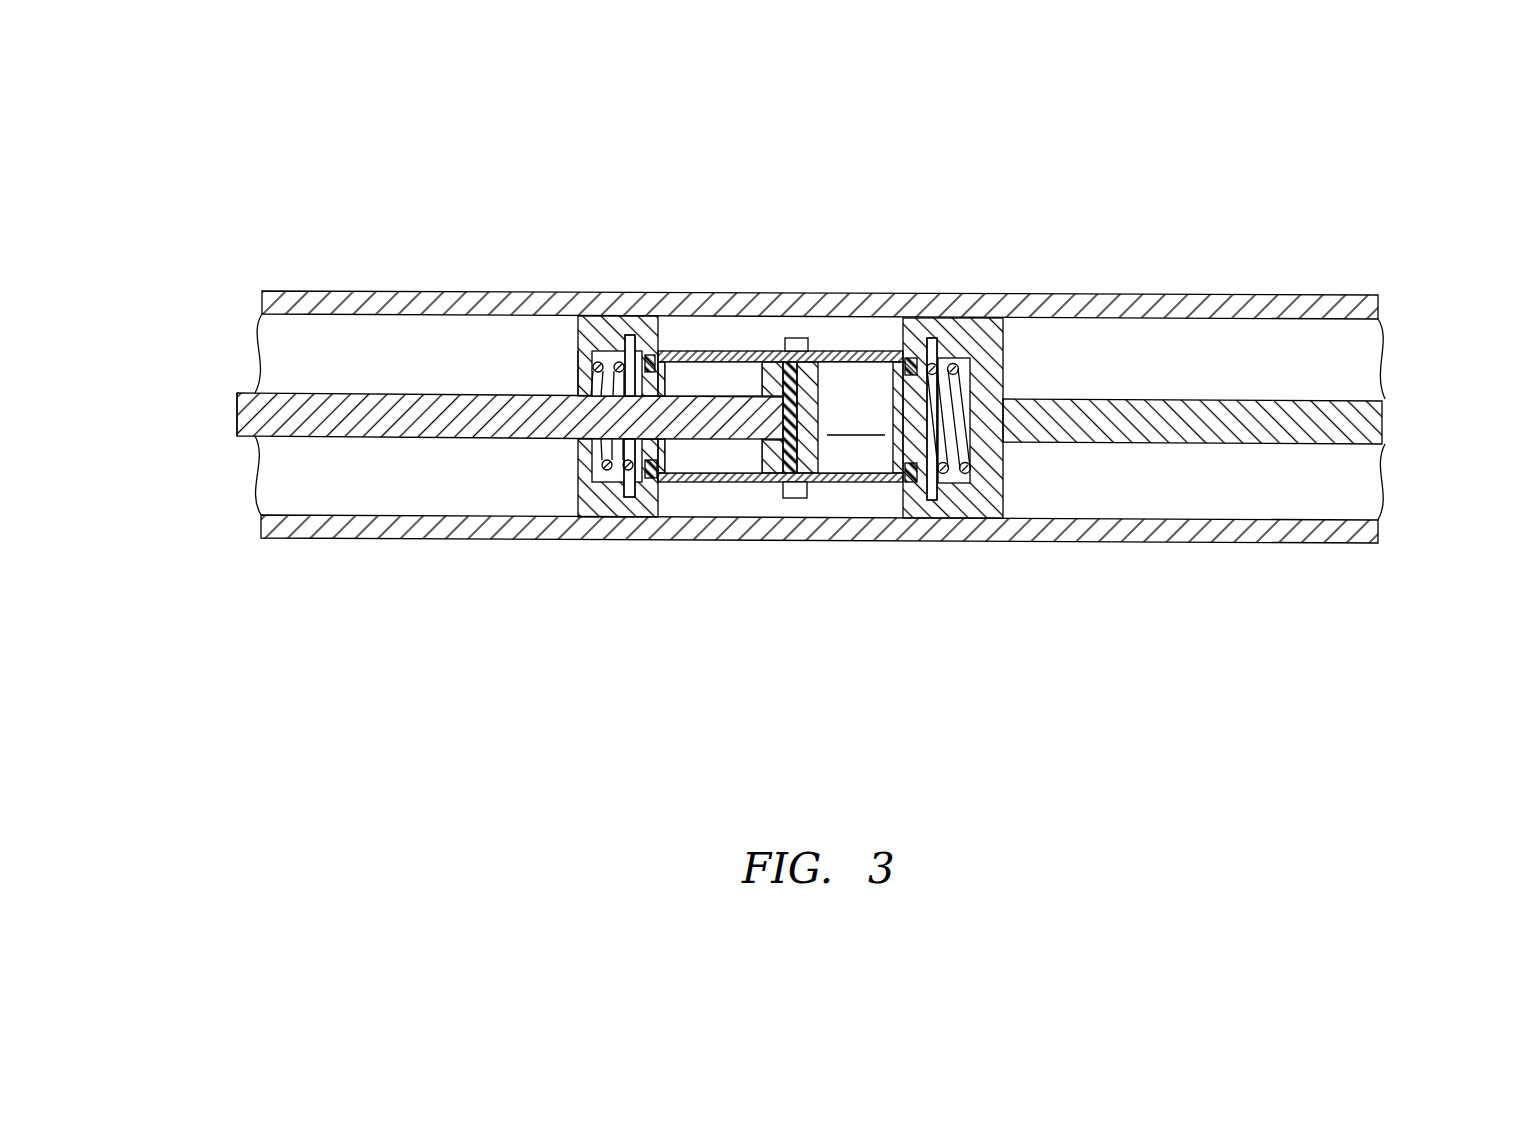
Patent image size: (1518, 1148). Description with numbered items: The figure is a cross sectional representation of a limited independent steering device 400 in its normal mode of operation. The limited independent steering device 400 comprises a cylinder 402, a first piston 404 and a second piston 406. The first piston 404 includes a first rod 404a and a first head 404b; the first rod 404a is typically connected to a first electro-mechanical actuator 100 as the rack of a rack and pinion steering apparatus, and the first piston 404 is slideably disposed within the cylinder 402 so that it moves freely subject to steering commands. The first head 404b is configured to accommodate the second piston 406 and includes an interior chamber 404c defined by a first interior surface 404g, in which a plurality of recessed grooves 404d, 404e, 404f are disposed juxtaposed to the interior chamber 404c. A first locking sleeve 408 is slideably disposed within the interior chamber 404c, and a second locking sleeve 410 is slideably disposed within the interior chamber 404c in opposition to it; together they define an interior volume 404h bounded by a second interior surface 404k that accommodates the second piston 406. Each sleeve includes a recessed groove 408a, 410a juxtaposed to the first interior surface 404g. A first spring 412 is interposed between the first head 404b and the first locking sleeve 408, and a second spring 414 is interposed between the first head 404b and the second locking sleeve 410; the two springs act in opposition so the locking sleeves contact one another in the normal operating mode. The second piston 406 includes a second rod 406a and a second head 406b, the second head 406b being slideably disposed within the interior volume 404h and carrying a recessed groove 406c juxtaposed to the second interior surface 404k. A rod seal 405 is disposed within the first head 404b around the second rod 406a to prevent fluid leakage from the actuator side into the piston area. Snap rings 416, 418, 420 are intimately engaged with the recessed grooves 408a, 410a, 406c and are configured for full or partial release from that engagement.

The first electro-mechanical actuator 100 is at (1388, 423).
The limited independent steering device 400 is at (818, 452).
The cylinder 402 is at (1300, 293).
The first piston 404 is at (950, 411).
The first rod 404a is at (1357, 410).
The first head 404b is at (583, 488).
The interior chamber 404c is at (575, 316).
The recessed groove 404d is at (610, 351).
The recessed groove 404e is at (795, 338).
The recessed groove 404f is at (936, 340).
The first interior surface 404g is at (653, 353).
The interior volume 404h is at (855, 417).
The second interior surface 404k is at (704, 473).
The rod seal 405 is at (507, 360).
The second piston 406 is at (463, 432).
The second rod 406a is at (237, 393).
The second head 406b is at (758, 460).
The recessed groove 406c is at (822, 362).
The first locking sleeve 408 is at (853, 490).
The recessed groove 408a is at (912, 358).
The second locking sleeve 410 is at (738, 351).
The recessed groove 410a is at (631, 335).
The first spring 412 is at (962, 440).
The second spring 414 is at (577, 380).
The snap ring 416 is at (932, 419).
The snap ring 418 is at (629, 416).
The snap ring 420 is at (790, 417).